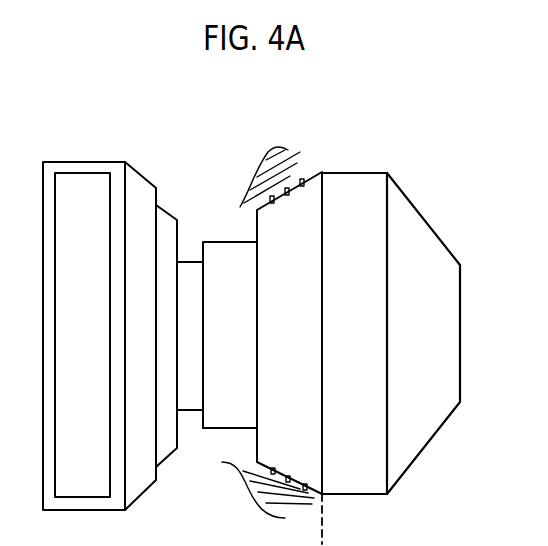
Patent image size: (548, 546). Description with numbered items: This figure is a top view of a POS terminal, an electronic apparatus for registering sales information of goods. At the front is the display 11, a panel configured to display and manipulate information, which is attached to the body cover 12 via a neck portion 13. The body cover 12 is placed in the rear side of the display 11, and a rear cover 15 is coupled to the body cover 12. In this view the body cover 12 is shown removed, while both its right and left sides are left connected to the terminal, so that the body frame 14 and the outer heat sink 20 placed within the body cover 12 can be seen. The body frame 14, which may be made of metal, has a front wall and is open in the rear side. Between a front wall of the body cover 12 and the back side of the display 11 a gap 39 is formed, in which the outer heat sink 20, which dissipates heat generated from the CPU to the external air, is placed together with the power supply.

The display 11 is at (70, 162).
The body cover 12 is at (287, 167).
The neck portion 13 is at (186, 245).
The body frame 14 is at (290, 217).
The rear cover 15 is at (348, 182).
The outer heat sink 20 is at (212, 238).
The gap 39 is at (199, 470).